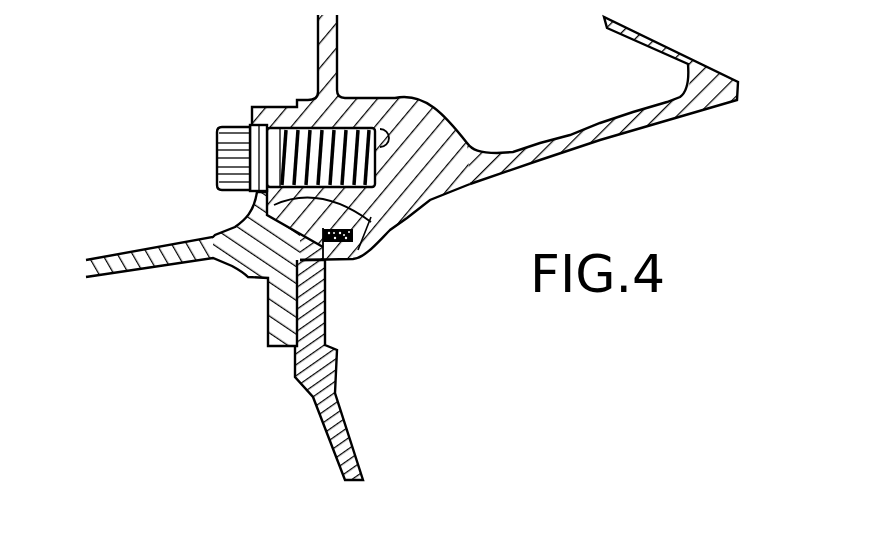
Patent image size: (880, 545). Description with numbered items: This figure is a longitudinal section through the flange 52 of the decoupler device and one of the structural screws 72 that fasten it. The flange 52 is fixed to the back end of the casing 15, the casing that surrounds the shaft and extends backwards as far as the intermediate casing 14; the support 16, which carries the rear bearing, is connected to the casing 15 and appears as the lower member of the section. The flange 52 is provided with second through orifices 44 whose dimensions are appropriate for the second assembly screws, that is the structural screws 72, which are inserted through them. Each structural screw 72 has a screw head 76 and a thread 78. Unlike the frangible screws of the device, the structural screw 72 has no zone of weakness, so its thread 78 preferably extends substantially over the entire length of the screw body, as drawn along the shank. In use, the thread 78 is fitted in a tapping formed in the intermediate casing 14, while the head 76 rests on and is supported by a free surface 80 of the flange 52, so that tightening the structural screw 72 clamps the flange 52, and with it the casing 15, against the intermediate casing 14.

The intermediate casing 14 is at (577, 128).
The casing 15 is at (146, 268).
The support 16 is at (355, 458).
The second through orifices 44 is at (406, 148).
The flange 52 is at (372, 221).
The structural screw 72 is at (266, 109).
The screw head 76 is at (214, 178).
The thread 78 is at (345, 133).
The free surface 80 is at (254, 107).